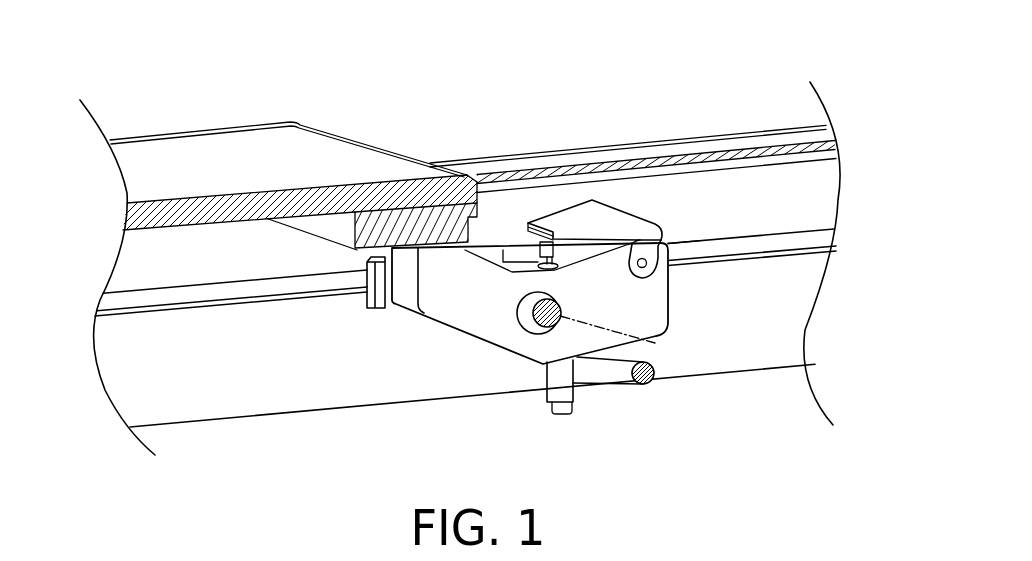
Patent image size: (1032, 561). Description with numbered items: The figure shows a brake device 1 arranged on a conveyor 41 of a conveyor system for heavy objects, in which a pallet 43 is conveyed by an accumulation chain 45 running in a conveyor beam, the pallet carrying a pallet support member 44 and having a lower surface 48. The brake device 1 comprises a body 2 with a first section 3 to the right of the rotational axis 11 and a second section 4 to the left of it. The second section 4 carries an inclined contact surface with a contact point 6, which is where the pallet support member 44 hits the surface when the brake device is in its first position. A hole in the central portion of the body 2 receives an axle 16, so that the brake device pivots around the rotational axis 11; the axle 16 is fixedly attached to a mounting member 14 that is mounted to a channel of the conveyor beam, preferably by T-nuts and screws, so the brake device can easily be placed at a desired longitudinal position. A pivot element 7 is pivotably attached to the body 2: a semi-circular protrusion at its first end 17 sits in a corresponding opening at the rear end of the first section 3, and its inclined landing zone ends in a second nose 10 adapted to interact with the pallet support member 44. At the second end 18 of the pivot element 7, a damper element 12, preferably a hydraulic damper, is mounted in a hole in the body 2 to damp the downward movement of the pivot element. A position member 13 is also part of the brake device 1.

The brake device 1 is at (690, 58).
The body 2 is at (637, 335).
The first section 3 is at (655, 330).
The second section 4 is at (492, 322).
The contact point 6 is at (460, 252).
The pivot element 7 is at (668, 248).
The second nose 10 is at (606, 208).
The rotational axis 11 is at (600, 332).
The damper element 12 is at (573, 382).
The position member 13 is at (617, 362).
The mounting member 14 is at (393, 312).
The axle 16 is at (538, 340).
The first end 17 is at (648, 213).
The second end 18 is at (558, 207).
The conveyor 41 is at (233, 362).
The pallet 43 is at (317, 160).
The pallet support member 44 is at (403, 223).
The accumulation chain 45 is at (775, 127).
The lower surface 48 is at (302, 242).